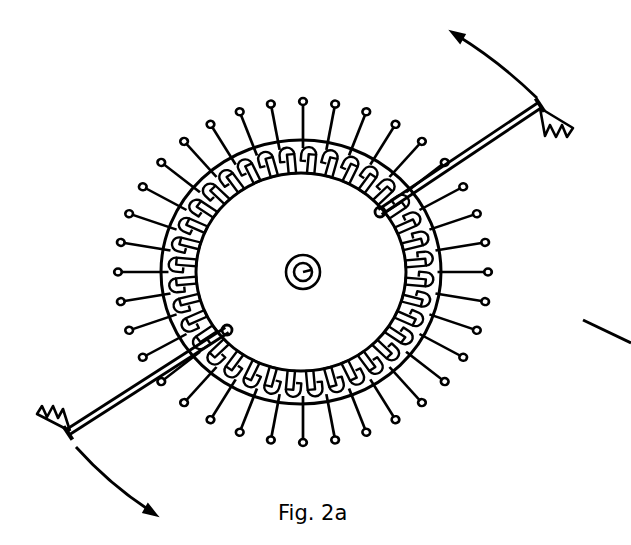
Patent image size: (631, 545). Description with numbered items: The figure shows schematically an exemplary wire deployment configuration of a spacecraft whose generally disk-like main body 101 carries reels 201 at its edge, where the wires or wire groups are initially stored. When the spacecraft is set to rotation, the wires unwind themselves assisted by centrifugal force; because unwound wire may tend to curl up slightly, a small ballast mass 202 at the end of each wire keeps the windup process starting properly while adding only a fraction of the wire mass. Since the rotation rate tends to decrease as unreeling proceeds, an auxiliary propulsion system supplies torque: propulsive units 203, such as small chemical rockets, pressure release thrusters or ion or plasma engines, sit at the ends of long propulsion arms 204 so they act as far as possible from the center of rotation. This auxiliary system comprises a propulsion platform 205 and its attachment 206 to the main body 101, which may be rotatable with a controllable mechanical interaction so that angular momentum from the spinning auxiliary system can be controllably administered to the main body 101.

The main body 101 is at (285, 141).
The reels 201 is at (321, 140).
The ballast mass 202 is at (333, 101).
The propulsive units 203 is at (548, 104).
The propulsion arms 204 is at (497, 150).
The propulsion platform 205 is at (445, 233).
The attachment 206 is at (322, 273).